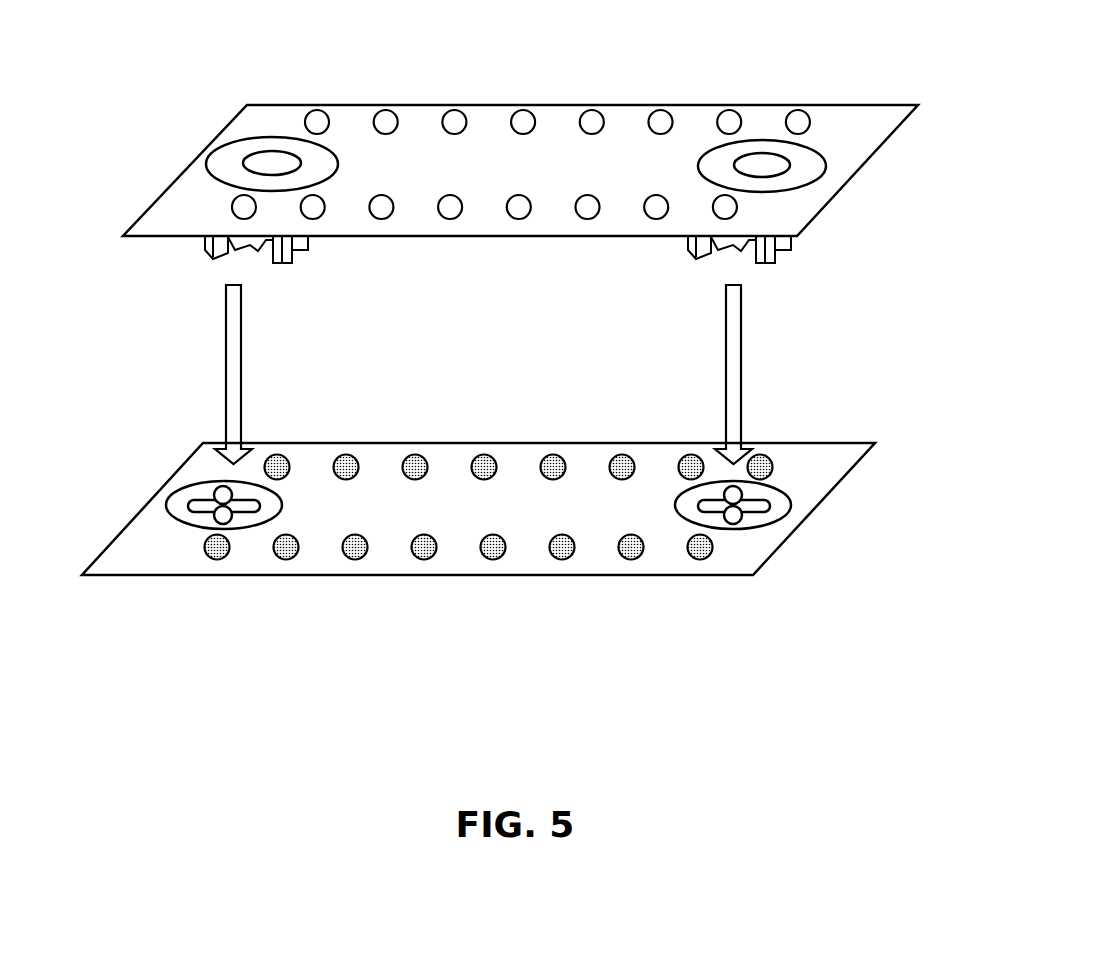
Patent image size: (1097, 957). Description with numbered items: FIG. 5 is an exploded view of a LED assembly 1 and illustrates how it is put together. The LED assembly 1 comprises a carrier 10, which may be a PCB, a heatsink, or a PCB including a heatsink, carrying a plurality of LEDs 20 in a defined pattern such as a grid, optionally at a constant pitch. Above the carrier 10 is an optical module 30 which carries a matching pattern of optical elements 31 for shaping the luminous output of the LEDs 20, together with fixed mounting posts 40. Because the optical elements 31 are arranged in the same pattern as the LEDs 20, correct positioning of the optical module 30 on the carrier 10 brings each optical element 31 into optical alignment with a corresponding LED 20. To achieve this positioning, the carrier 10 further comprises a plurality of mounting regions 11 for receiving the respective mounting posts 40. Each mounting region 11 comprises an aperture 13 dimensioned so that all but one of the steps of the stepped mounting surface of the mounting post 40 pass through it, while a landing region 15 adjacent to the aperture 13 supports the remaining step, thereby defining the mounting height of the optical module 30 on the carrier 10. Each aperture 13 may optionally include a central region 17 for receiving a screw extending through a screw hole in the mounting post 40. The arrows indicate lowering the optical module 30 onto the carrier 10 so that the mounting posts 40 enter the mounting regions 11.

The LED assembly 1 is at (523, 716).
The carrier 10 is at (843, 462).
The mounting region 11 is at (237, 530).
The aperture 13 is at (258, 503).
The landing region 15 is at (198, 490).
The central region 17 is at (212, 512).
The LED 20 is at (486, 455).
The optical module 30 is at (875, 127).
The optical element 31 is at (591, 115).
The mounting post 40 is at (270, 160).